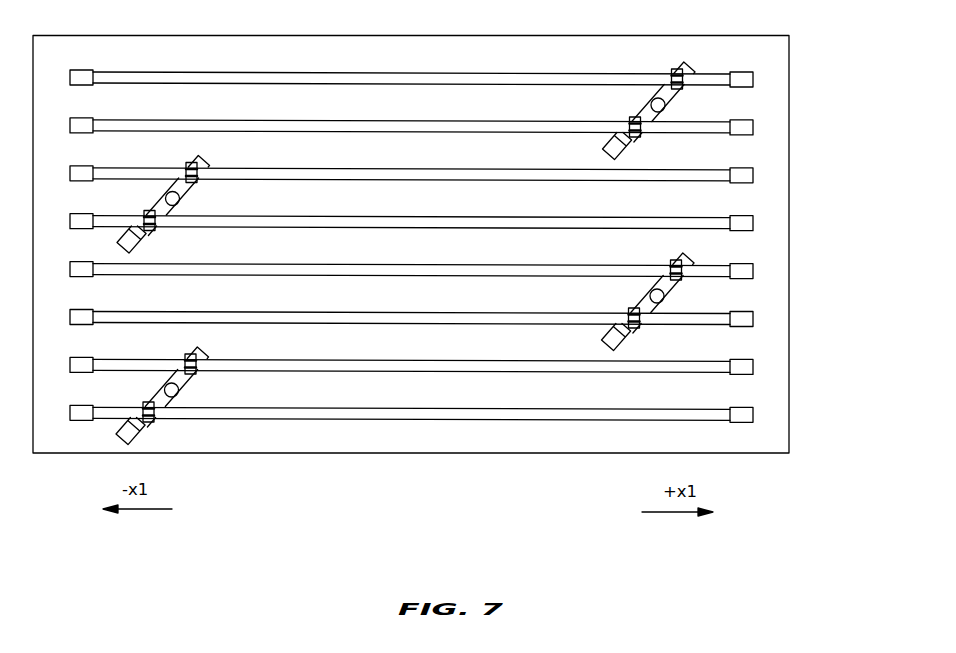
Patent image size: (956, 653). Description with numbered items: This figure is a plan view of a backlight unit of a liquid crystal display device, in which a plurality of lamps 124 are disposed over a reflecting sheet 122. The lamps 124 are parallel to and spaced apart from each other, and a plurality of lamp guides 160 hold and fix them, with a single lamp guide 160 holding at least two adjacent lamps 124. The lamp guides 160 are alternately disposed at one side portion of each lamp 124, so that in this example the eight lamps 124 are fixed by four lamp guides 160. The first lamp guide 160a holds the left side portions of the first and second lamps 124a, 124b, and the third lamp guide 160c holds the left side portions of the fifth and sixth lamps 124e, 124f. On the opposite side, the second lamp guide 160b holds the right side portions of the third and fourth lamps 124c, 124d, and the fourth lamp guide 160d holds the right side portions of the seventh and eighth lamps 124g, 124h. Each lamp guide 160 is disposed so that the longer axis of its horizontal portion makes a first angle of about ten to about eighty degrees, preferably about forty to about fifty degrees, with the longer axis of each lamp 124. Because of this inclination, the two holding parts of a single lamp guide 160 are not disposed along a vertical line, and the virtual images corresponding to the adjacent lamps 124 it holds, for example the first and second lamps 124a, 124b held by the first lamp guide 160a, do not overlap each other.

The reflecting sheet 122 is at (789, 158).
The lamps 124 is at (411, 232).
The first lamp 124a is at (411, 399).
The second lamp 124b is at (296, 363).
The third lamp 124c is at (296, 316).
The fourth lamp 124d is at (296, 268).
The fifth lamp 124e is at (296, 220).
The sixth lamp 124f is at (296, 172).
The seventh lamp 124g is at (296, 124).
The eighth lamp 124h is at (296, 76).
The lamp guides 160 is at (405, 313).
The first lamp guide 160a is at (166, 396).
The second lamp guide 160b is at (625, 330).
The third lamp guide 160c is at (150, 240).
The fourth lamp guide 160d is at (605, 152).